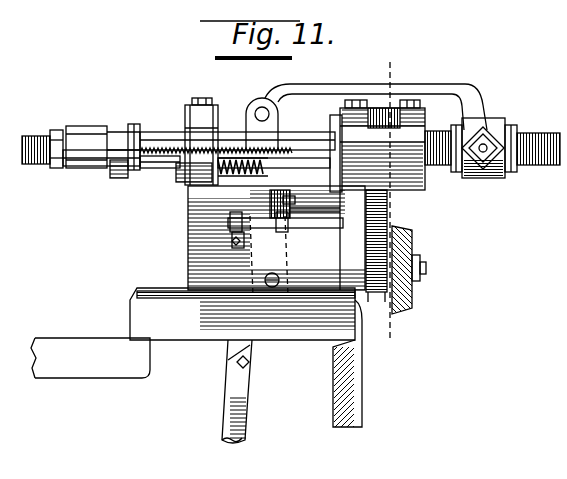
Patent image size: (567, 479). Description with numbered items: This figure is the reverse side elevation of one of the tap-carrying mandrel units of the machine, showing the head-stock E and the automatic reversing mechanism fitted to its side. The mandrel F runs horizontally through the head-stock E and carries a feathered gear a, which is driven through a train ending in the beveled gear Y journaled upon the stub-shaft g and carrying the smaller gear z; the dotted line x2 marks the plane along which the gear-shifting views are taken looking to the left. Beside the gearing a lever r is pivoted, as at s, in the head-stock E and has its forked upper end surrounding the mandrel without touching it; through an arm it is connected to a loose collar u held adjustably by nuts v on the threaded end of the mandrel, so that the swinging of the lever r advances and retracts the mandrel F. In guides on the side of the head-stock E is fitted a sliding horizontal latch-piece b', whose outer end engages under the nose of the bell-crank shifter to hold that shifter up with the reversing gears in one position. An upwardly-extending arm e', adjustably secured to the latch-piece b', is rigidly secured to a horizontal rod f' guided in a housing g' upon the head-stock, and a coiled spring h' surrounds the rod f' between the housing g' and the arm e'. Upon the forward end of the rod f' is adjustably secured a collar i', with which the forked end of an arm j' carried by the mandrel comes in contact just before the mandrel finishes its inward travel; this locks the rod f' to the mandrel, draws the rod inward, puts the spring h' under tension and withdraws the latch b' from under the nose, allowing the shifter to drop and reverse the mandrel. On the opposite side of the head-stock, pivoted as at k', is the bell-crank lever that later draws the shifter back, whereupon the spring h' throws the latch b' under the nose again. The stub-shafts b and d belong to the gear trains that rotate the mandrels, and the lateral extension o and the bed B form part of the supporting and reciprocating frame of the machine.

The mandrel F is at (172, 134).
The collar i' is at (112, 184).
The arm j' is at (124, 176).
The horizontal rod f' is at (196, 173).
The housing g' is at (186, 192).
The coiled spring h' is at (243, 182).
The head-stock E is at (188, 228).
The upwardly-extending arm e' is at (315, 196).
The pivot k' is at (293, 204).
The stub-shaft d is at (330, 228).
The pivot s is at (279, 278).
The sliding horizontal latch-piece b' is at (354, 184).
The stub-shaft b is at (366, 109).
The feathered gear a is at (378, 118).
The dotted line x2 is at (389, 197).
The lateral extension o is at (452, 175).
The loose collar u is at (480, 179).
The nuts v is at (510, 175).
The beveled gear Y is at (416, 240).
The stub-shaft g is at (434, 268).
The gear z is at (382, 294).
The bed B is at (70, 337).
The lever r is at (246, 366).